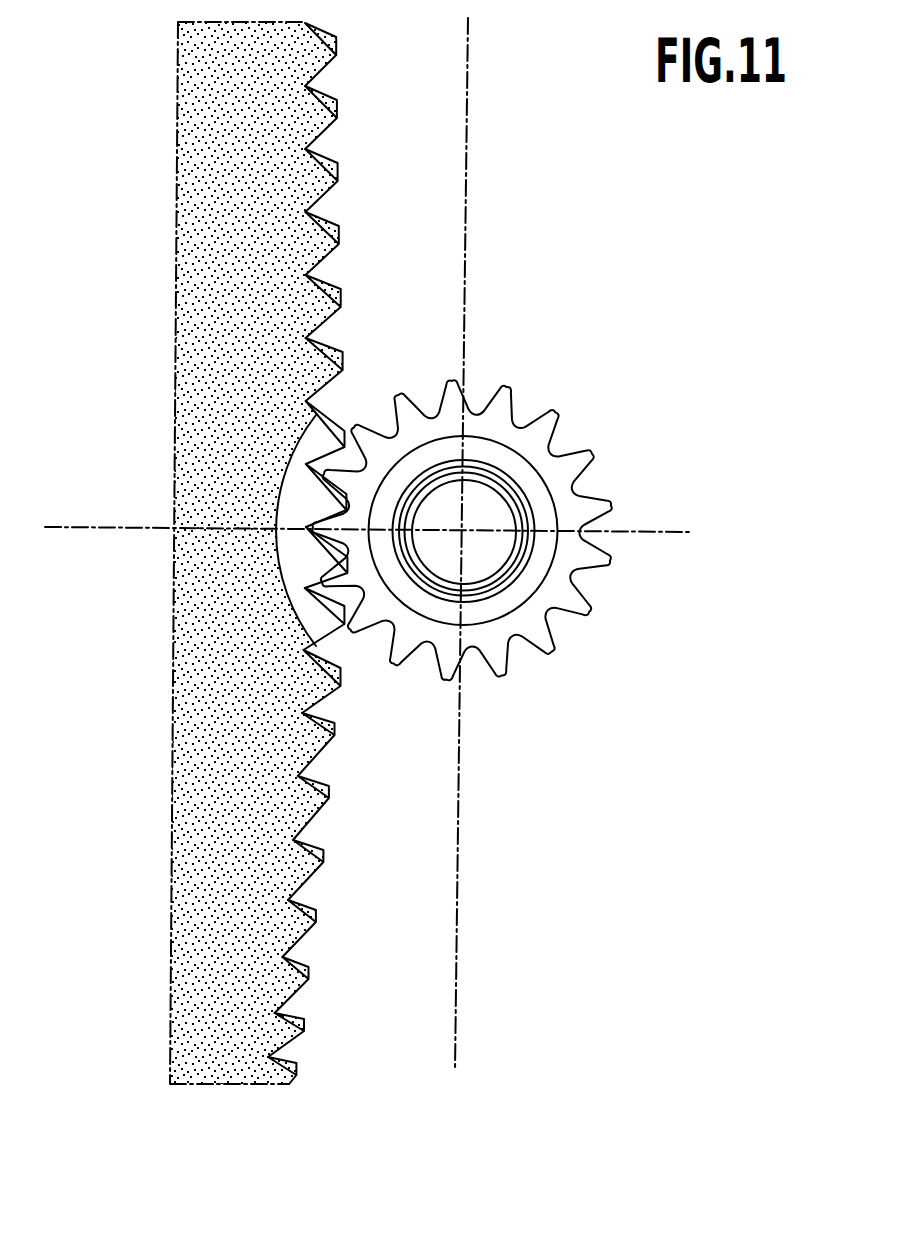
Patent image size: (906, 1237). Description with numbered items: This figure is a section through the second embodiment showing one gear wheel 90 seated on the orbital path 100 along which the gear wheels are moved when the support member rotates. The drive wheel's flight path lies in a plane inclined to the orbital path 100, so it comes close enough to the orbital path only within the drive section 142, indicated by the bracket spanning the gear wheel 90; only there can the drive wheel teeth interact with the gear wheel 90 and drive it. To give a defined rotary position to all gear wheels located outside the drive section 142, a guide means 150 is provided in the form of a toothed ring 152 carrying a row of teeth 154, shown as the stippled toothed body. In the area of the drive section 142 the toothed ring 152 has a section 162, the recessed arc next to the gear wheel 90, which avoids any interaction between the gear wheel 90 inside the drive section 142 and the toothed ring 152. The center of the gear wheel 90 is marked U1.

The orbital path 100 is at (466, 113).
The guide means 150 is at (355, 555).
The section 162 is at (288, 490).
The gear wheel 90 is at (440, 422).
The rotation center U1 is at (463, 530).
The drive section 142 is at (558, 485).
The row of teeth 154 is at (334, 742).
The toothed ring 152 is at (324, 856).